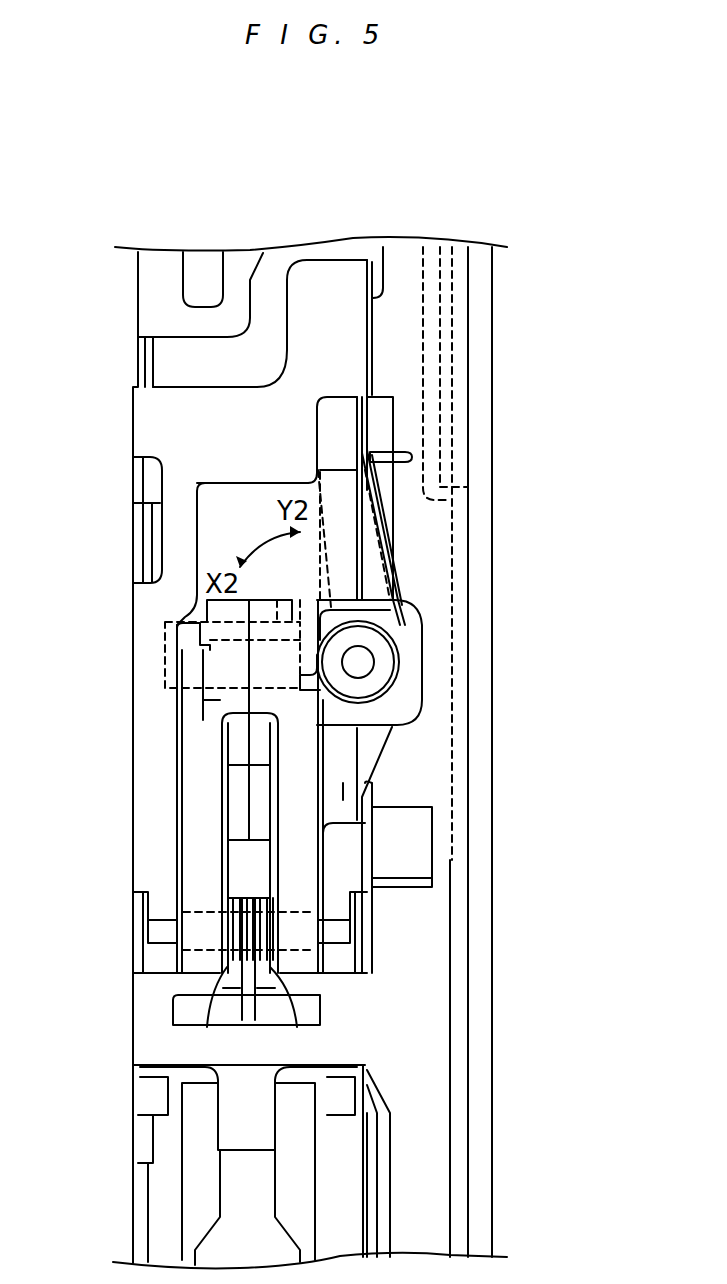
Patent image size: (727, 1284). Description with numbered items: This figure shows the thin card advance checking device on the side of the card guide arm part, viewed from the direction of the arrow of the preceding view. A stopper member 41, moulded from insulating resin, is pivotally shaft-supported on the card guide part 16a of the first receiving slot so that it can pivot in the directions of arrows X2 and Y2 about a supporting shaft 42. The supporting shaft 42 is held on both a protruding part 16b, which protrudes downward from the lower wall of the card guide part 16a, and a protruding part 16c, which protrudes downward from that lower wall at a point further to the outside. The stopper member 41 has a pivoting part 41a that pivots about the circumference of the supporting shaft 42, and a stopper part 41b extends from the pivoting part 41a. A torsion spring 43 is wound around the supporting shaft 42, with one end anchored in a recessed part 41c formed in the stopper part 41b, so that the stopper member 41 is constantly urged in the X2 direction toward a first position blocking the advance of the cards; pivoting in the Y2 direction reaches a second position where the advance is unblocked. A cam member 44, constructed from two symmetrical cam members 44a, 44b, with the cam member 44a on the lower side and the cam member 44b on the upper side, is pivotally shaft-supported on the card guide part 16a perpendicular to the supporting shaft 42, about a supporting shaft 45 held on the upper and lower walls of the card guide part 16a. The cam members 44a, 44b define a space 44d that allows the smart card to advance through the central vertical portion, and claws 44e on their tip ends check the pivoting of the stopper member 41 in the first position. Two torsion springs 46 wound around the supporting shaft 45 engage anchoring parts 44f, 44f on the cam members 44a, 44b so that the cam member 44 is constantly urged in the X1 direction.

The card guide part 16a is at (260, 752).
The protruding part 16b is at (377, 742).
The protruding part 16c is at (407, 702).
The stopper member 41 is at (405, 633).
The pivoting part 41a is at (387, 655).
The stopper part 41b is at (300, 683).
The recessed part 41c is at (165, 632).
The supporting shaft 42 is at (363, 665).
The torsion spring 43 is at (257, 707).
The cam member 44 is at (173, 800).
The cam member 44a is at (293, 902).
The cam member 44b is at (192, 898).
The space 44d is at (233, 873).
The claws 44e is at (254, 534).
The anchoring parts 44f is at (235, 718).
The supporting shaft 45 is at (313, 950).
The torsion springs 46 is at (246, 980).